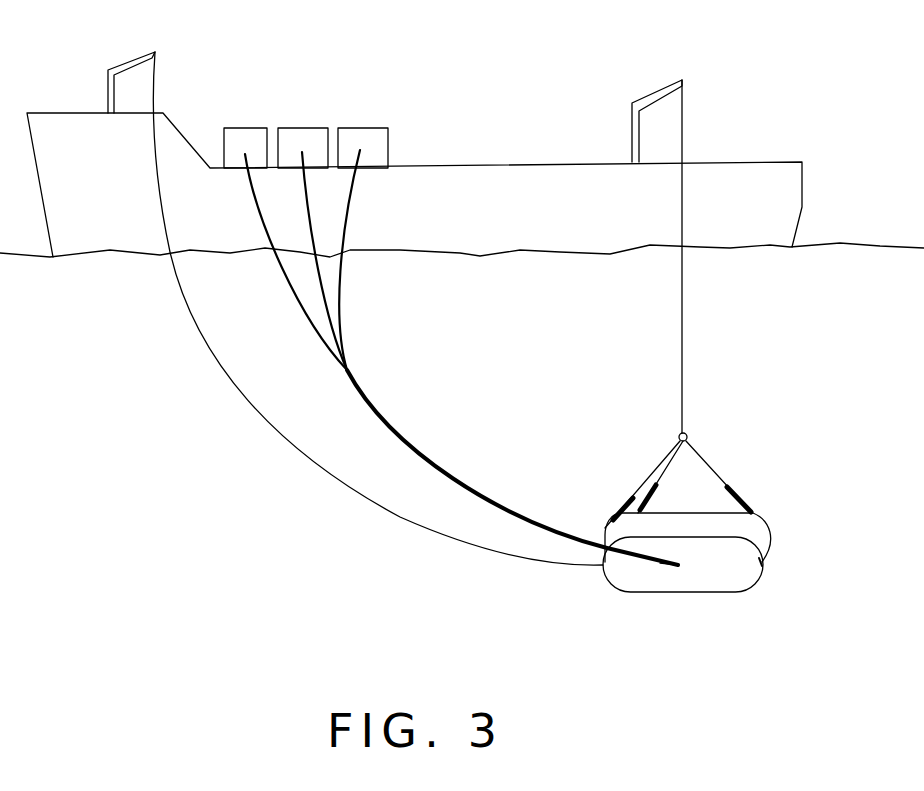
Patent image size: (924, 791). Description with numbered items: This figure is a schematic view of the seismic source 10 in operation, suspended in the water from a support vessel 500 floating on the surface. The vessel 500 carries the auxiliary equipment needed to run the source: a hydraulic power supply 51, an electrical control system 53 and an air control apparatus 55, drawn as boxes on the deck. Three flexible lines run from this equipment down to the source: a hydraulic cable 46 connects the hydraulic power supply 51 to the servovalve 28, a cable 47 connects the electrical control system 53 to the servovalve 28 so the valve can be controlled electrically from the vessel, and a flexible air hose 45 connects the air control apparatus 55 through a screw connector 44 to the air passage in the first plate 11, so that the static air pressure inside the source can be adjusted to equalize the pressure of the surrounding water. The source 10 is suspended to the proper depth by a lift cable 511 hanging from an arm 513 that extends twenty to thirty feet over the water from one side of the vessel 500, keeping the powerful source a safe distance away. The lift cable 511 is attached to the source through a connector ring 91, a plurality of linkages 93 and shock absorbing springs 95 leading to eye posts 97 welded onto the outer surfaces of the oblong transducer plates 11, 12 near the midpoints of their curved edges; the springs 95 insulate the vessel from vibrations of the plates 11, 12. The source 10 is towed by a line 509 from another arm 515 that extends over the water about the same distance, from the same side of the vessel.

The seismic source 10 is at (745, 521).
The first plate 11 is at (743, 587).
The second plate 12 is at (768, 530).
The servovalve 28 is at (680, 565).
The screw connector 44 is at (665, 565).
The flexible air hose 45 is at (252, 199).
The hydraulic cable 46 is at (305, 193).
The cable 47 is at (352, 178).
The hydraulic power supply 51 is at (306, 133).
The electrical control system 53 is at (364, 133).
The air control apparatus 55 is at (246, 134).
The connector ring 91 is at (688, 428).
The linkages 93 is at (710, 462).
The shock absorbing springs 95 is at (743, 492).
The eye posts 97 is at (765, 560).
The support vessel 500 is at (515, 153).
The line 509 is at (226, 375).
The lift cable 511 is at (684, 303).
The arm 513 is at (659, 90).
The arm 515 is at (138, 55).